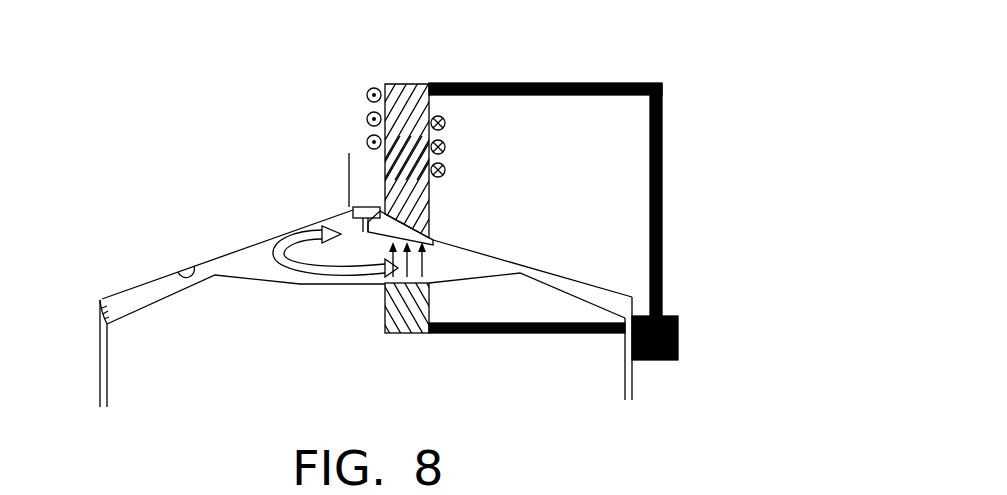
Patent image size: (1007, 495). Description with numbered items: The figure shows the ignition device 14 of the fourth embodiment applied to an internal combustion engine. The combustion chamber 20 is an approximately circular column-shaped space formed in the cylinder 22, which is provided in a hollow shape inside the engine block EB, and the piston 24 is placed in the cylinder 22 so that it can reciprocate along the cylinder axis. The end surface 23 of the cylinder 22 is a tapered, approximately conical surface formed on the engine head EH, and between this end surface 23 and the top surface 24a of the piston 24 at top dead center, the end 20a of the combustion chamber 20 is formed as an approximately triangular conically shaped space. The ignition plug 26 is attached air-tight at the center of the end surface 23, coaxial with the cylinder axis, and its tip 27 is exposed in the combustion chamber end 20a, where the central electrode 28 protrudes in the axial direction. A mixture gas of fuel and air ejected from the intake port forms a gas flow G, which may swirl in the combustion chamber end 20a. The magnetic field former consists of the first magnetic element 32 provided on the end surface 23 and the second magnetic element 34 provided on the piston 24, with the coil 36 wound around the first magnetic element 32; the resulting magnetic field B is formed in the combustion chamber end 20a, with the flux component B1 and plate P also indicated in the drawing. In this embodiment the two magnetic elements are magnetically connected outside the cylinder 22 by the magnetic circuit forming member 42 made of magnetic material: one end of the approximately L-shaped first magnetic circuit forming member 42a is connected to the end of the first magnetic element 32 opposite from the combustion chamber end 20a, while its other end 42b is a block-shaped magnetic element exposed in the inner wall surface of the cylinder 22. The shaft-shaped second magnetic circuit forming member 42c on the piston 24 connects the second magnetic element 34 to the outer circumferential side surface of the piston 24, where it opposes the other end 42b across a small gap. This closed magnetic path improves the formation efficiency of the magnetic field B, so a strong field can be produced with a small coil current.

The ignition device 14 is at (158, 153).
The combustion chamber 20 is at (136, 294).
The end of the combustion chamber 20a is at (500, 249).
The cylinder 22 is at (104, 310).
The end surface of the cylinder 23 is at (182, 277).
The piston 24 is at (468, 397).
The top surface of the piston 24a is at (490, 274).
The ignition plug 26 is at (344, 178).
The tip of the ignition plug 27 is at (352, 208).
The central electrode 28 is at (362, 231).
The first magnetic element 32 is at (431, 206).
The second magnetic element 34 is at (385, 304).
The coil 36 is at (366, 94).
The magnetic circuit forming member 42 is at (613, 80).
The first magnetic circuit forming member 42a is at (514, 83).
The other end of the first magnetic circuit forming member 42b is at (673, 316).
The second magnetic circuit forming member 42c is at (546, 334).
The plate P is at (442, 229).
The magnetic field B is at (446, 262).
The flux component B1 is at (430, 265).
The gas flow G is at (268, 256).
The engine head EH is at (276, 226).
The engine block EB is at (75, 392).